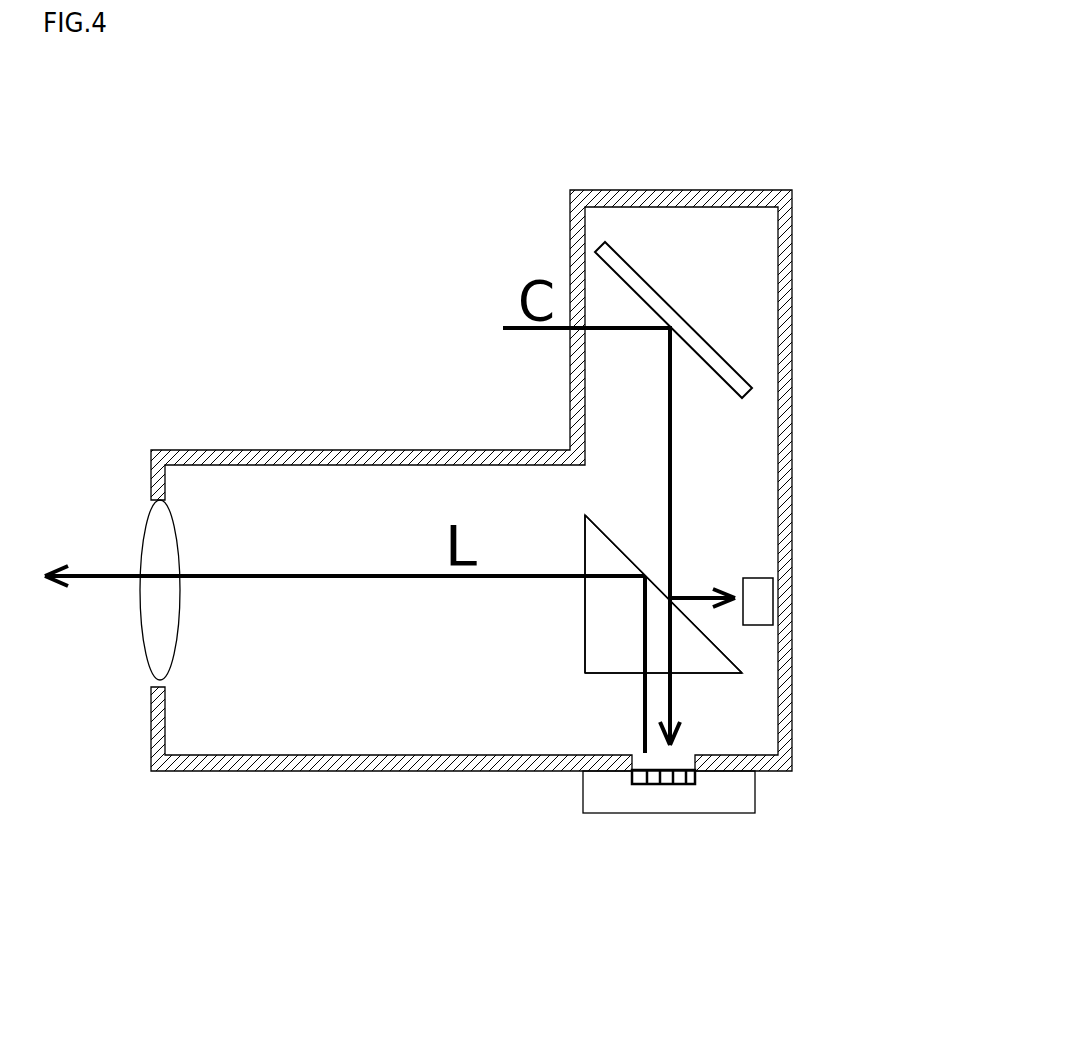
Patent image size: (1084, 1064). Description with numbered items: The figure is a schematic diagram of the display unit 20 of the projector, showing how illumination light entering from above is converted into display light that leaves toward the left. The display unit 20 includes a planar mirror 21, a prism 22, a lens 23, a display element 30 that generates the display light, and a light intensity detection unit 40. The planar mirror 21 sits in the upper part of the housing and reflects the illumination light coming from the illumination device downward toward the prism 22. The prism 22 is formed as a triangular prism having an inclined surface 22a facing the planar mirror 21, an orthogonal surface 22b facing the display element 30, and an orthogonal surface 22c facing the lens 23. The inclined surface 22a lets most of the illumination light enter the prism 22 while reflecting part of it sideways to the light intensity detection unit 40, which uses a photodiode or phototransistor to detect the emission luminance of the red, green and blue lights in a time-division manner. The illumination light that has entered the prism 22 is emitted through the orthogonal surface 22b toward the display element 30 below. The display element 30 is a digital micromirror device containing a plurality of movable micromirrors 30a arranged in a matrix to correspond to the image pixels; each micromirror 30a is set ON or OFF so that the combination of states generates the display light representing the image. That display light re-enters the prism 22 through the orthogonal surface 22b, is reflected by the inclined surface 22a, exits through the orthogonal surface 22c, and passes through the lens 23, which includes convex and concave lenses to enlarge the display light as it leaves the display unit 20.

The display unit 20 is at (832, 148).
The planar mirror 21 is at (710, 352).
The prism 22 is at (593, 667).
The inclined surface 22a is at (728, 657).
The orthogonal surface 22b is at (703, 675).
The orthogonal surface 22c is at (585, 618).
The lens 23 is at (165, 645).
The display element 30 is at (733, 800).
The micromirror 30a is at (632, 780).
The light intensity detection unit 40 is at (765, 598).